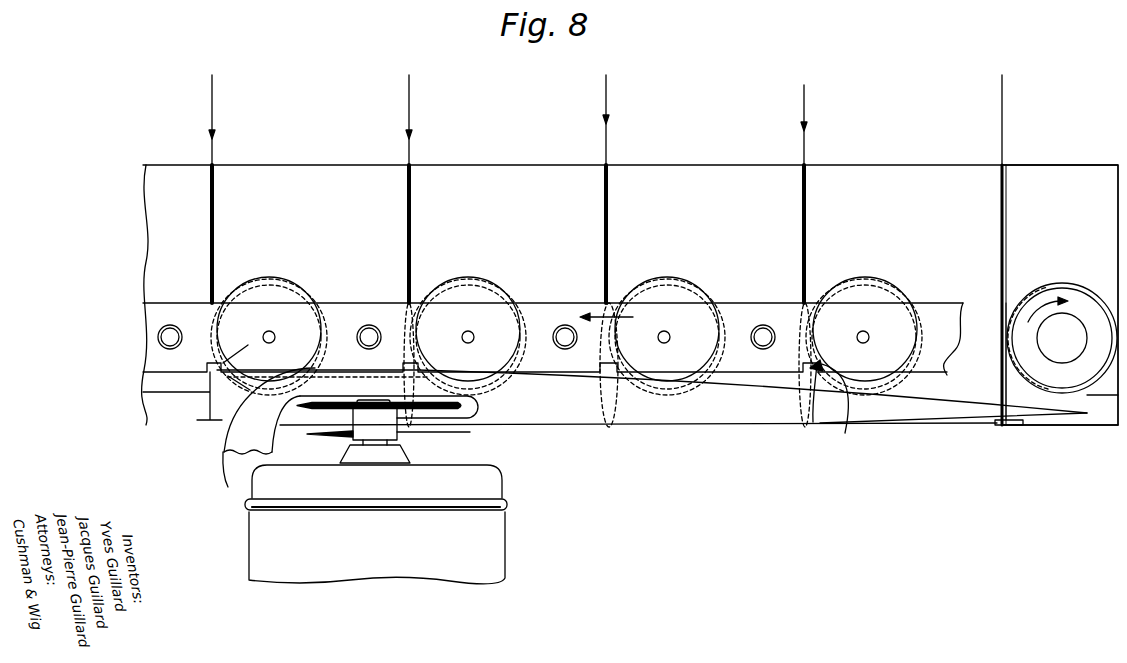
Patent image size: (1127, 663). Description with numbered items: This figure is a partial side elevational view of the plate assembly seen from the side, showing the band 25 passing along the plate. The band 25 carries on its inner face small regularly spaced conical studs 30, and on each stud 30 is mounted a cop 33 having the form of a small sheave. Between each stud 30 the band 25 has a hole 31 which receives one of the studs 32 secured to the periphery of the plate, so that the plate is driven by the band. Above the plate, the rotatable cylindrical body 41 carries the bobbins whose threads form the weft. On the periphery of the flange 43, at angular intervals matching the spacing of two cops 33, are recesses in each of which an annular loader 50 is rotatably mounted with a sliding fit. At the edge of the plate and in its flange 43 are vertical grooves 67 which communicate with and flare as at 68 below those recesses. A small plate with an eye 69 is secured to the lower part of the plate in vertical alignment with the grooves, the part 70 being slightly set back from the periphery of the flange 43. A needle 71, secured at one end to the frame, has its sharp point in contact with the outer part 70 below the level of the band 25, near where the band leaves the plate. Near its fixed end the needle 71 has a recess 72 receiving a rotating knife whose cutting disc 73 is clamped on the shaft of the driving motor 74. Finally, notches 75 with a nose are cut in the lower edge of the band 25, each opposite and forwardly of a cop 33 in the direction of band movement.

The rotatable cylindrical body 41 is at (213, 113).
The vertical grooves 67 is at (1007, 178).
The flange 43 is at (1098, 208).
The loader 50 is at (288, 288).
The cop 33 is at (480, 296).
The band 25 is at (727, 308).
The conical studs 30 is at (664, 343).
The hole 31 is at (765, 327).
The studs 32 is at (764, 349).
The needle 71 is at (583, 421).
The recess 72 is at (468, 413).
The cutting disc 73 is at (447, 406).
The notches 75 is at (839, 404).
The flaring portion 68 is at (1013, 383).
The plate with an eye 69 is at (1008, 426).
The outer part 70 is at (1088, 419).
The driving motor 74 is at (258, 487).